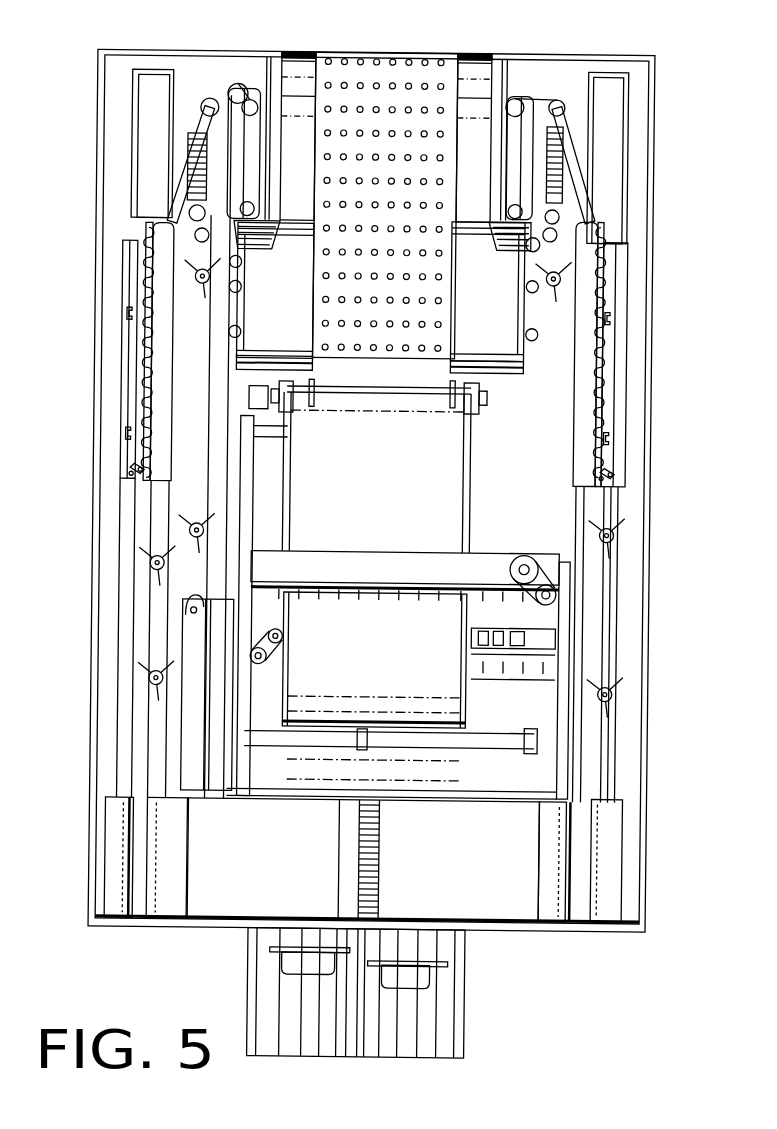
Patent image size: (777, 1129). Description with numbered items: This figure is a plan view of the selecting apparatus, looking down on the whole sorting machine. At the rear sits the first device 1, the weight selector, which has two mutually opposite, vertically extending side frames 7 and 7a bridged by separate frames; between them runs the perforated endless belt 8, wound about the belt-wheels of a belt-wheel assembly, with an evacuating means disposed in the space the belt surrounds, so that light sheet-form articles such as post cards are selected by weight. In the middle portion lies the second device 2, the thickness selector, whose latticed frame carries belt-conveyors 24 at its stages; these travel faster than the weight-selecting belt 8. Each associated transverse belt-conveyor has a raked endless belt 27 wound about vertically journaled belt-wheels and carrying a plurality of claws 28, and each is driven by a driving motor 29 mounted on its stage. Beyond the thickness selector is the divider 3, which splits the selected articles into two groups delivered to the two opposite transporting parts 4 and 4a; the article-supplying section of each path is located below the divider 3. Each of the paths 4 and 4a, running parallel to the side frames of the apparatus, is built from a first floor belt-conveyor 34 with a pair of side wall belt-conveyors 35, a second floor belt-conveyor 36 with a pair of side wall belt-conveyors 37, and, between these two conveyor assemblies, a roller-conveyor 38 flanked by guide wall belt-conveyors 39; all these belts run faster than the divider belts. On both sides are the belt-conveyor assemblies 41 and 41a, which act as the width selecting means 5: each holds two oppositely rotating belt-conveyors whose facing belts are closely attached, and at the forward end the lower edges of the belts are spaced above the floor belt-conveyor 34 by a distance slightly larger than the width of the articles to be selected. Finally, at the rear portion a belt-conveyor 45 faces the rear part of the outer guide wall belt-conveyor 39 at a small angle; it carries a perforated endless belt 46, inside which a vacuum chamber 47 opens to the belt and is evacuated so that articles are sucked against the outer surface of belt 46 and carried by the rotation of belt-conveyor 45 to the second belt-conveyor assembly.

The first device 1 is at (414, 78).
The second device 2 is at (412, 552).
The divider 3 is at (380, 912).
The transporting part 4 is at (145, 732).
The transporting part 4a is at (607, 737).
The width selecting means 5 is at (130, 421).
The side frame 7 is at (474, 68).
The side frame 7a is at (293, 64).
The perforated endless belt 8 is at (362, 73).
The belt-conveyor 24 is at (385, 432).
The raked endless belt 27 is at (370, 597).
The claws 28 is at (430, 597).
The driving motor 29 is at (553, 608).
The first floor belt-conveyor 34 is at (138, 921).
The side wall belt-conveyors 35 is at (152, 778).
The second floor belt-conveyor 36 is at (228, 318).
The side wall belt-conveyors 37 is at (527, 320).
The roller-conveyor 38 is at (242, 250).
The guide wall belt-conveyors 39 is at (200, 112).
The belt-conveyor assembly 41 is at (128, 283).
The belt-conveyor assembly 41a is at (620, 290).
The belt-conveyor 45 is at (254, 150).
The perforated endless belt 46 is at (378, 150).
The vacuum chamber 47 is at (237, 90).